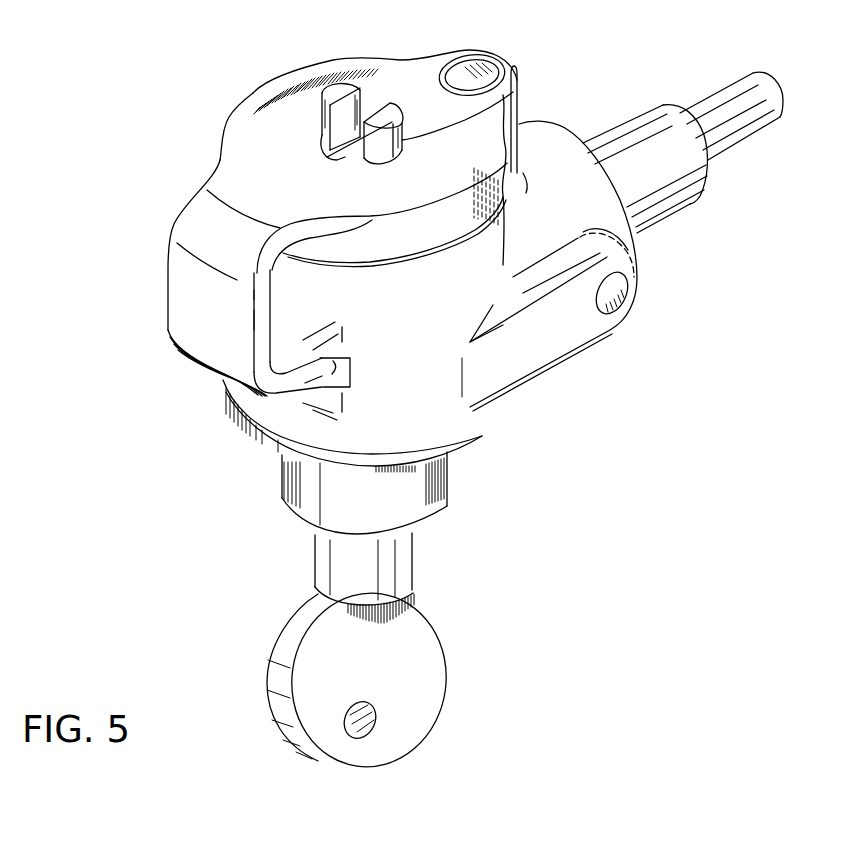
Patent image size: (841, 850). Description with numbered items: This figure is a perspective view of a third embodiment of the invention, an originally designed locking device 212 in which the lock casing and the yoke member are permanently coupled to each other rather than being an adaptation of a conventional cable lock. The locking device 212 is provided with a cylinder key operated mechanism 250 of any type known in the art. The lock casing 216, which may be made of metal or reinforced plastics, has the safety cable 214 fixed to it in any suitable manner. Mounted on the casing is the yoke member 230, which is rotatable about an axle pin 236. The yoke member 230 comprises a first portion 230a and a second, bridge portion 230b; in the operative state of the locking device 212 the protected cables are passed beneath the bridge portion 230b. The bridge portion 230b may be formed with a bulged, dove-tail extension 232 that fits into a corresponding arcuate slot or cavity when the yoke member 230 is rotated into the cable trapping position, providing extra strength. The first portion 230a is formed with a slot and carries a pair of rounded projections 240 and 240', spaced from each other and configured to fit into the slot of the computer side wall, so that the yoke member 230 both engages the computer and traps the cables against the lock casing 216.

The locking device 212 is at (150, 112).
The safety cable 214 is at (730, 117).
The lock casing 216 is at (423, 323).
The yoke member 230 is at (123, 334).
The first portion 230a is at (252, 97).
The bridge portion 230b is at (193, 294).
The dove-tail extension 232 is at (330, 378).
The axle pin 236 is at (490, 80).
The rounded projection 240 is at (554, 165).
The rounded projection 240' is at (250, 143).
The cylinder key operated mechanism 250 is at (430, 493).